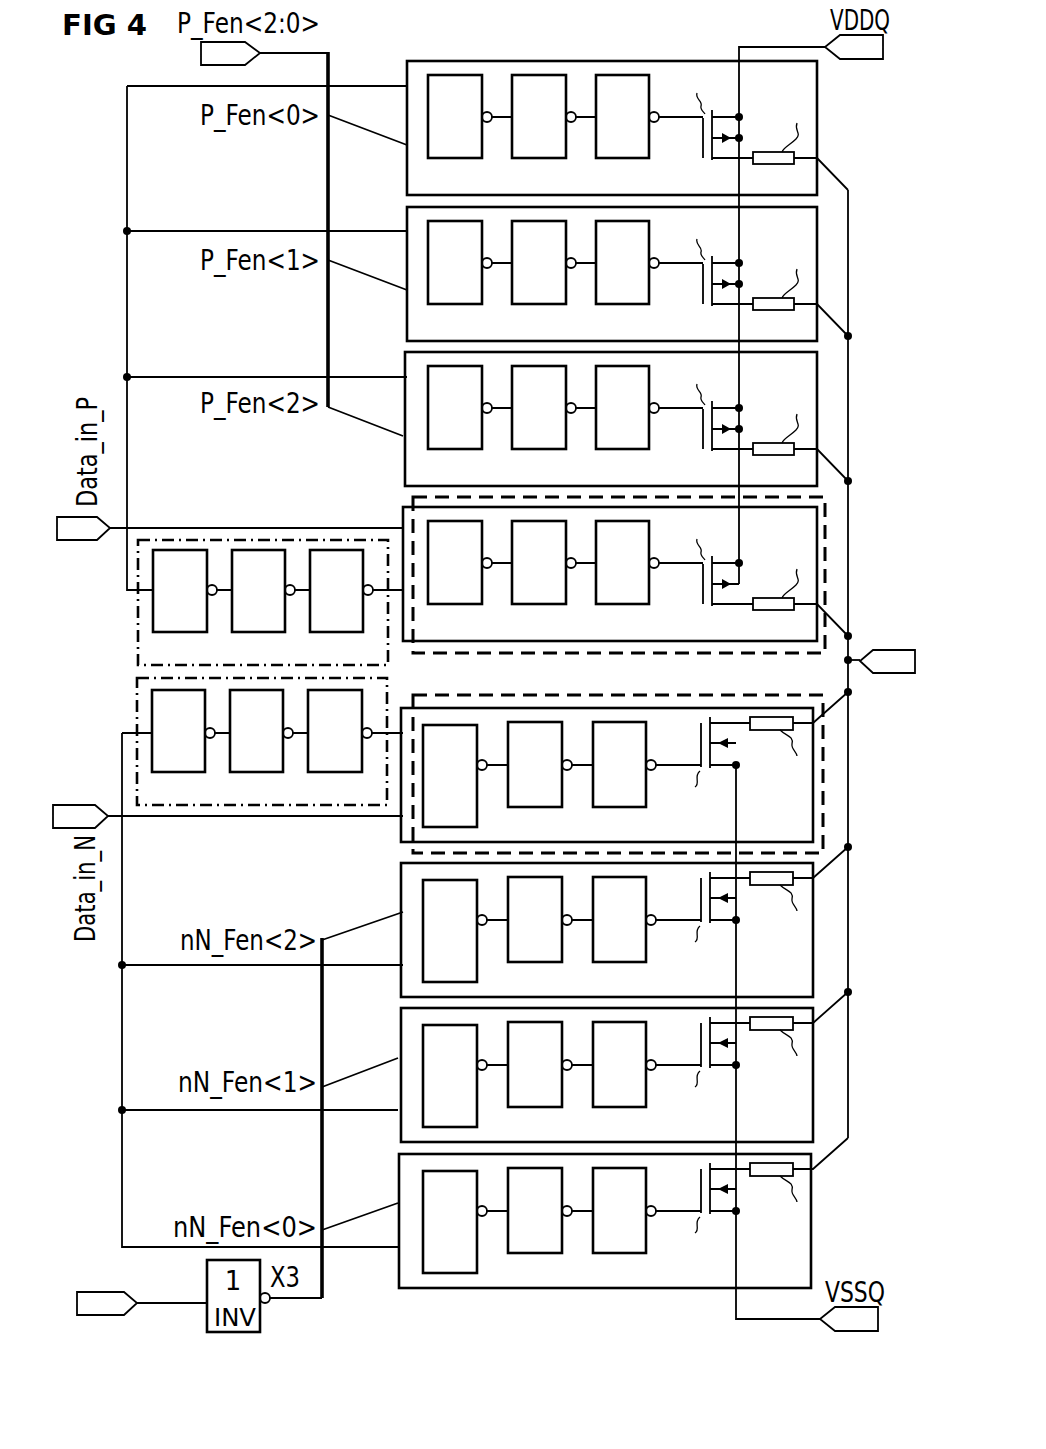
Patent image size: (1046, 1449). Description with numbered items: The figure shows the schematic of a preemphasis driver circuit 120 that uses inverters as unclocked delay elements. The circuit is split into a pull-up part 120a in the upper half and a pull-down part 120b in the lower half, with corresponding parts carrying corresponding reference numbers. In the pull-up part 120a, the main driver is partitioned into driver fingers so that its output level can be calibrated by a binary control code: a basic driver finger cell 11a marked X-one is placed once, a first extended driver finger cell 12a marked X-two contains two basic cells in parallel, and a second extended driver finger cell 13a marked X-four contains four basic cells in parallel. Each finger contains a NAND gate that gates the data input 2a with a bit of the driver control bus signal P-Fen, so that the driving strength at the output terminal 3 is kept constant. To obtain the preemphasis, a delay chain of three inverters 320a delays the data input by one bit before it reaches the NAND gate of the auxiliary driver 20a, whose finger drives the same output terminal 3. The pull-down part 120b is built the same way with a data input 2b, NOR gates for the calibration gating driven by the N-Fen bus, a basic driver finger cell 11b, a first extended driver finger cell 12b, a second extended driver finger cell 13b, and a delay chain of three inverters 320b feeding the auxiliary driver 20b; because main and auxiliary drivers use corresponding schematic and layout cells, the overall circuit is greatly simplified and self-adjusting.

The pull-up part 120a is at (397, 64).
The pull-down part 120b is at (376, 1275).
The preemphasis driver circuit 120 is at (150, 1326).
The basic driver finger cell 11a is at (407, 175).
The first extended driver finger cell 12a is at (407, 218).
The second extended driver finger cell 13a is at (403, 470).
The auxiliary driver 20a is at (403, 523).
The auxiliary driver 20b is at (403, 830).
The second extended driver finger cell 13b is at (403, 875).
The first extended driver finger cell 12b is at (398, 1130).
The basic driver finger cell 11b is at (398, 1170).
The data input 2a is at (85, 543).
The data input 2b is at (73, 803).
The output terminal 3 is at (889, 674).
The inverters 320a is at (139, 612).
The inverters 320b is at (137, 684).